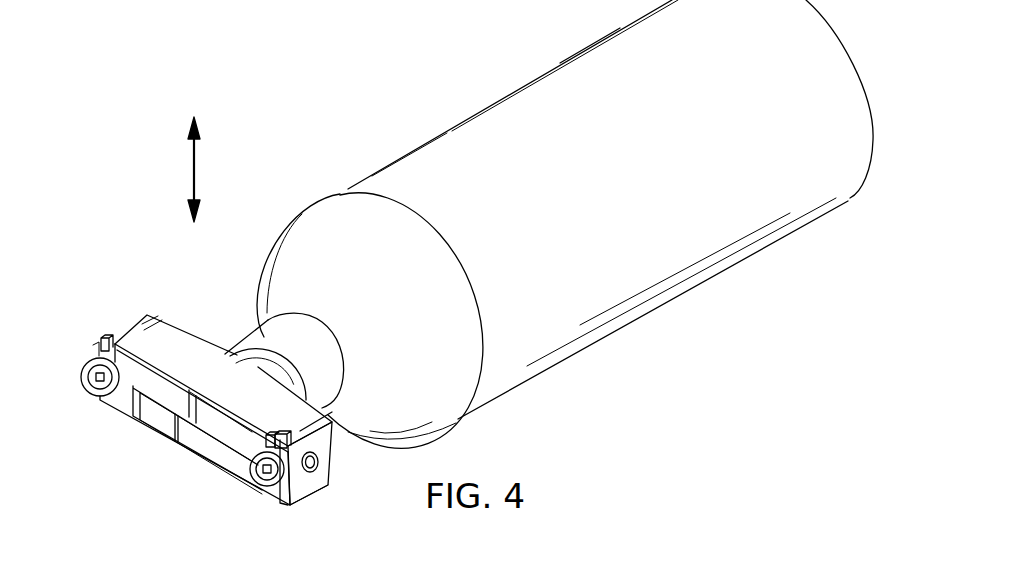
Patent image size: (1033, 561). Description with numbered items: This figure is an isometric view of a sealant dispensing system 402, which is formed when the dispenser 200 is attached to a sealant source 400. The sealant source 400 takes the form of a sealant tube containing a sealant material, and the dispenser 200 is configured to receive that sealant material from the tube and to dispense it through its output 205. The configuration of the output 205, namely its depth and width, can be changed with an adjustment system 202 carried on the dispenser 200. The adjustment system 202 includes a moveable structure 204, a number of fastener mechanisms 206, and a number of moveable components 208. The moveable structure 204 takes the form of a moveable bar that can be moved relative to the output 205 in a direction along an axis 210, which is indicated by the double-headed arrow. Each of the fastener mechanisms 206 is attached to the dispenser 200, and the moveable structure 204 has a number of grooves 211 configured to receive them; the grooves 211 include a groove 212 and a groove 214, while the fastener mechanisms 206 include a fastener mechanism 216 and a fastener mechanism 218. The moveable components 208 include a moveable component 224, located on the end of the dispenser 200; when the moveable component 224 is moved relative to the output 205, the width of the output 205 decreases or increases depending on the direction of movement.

The dispenser 200 is at (162, 311).
The adjustment system 202 is at (179, 396).
The moveable structure 204 is at (240, 442).
The output 205 is at (216, 445).
The number of fastener mechanisms 206 is at (92, 391).
The number of moveable components 208 is at (311, 484).
The axis 210 is at (196, 165).
The number of grooves 211 is at (258, 437).
The groove 212 is at (115, 333).
The groove 214 is at (285, 426).
The fastener mechanism 216 is at (87, 354).
The fastener mechanism 218 is at (268, 495).
The moveable component 224 is at (320, 459).
The sealant source 400 is at (435, 139).
The sealant dispensing system 402 is at (474, 96).